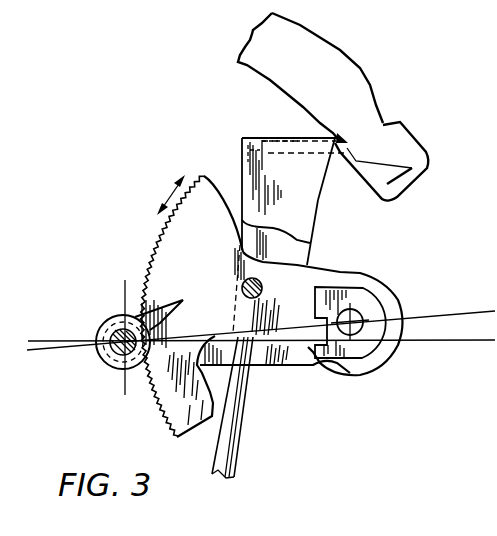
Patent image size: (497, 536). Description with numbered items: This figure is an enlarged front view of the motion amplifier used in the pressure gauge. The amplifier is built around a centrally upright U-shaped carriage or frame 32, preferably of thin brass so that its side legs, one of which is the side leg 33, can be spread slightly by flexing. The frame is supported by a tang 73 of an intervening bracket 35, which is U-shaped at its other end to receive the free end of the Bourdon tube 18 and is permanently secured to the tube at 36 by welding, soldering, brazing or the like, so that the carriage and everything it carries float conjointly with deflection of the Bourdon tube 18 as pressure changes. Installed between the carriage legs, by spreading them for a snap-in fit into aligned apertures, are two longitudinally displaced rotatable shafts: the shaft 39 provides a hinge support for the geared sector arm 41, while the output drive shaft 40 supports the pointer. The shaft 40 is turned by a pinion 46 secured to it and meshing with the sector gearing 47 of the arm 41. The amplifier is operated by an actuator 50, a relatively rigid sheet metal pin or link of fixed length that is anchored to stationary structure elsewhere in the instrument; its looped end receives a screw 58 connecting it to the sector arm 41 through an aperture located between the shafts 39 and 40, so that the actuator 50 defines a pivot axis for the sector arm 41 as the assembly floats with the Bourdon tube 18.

The Bourdon tube 18 is at (300, 47).
The securing location on Bourdon tube 36 is at (383, 122).
The bracket 35 is at (405, 186).
The side leg 33 is at (297, 200).
The tang 73 is at (252, 136).
The carriage or frame 32 is at (234, 159).
The sector gearing 47 is at (162, 233).
The geared sector arm 41 is at (207, 270).
The screw 58 is at (262, 291).
The shaft 39 is at (362, 318).
The output drive shaft 40 is at (104, 359).
The pinion 46 is at (125, 372).
The actuator 50 is at (231, 447).